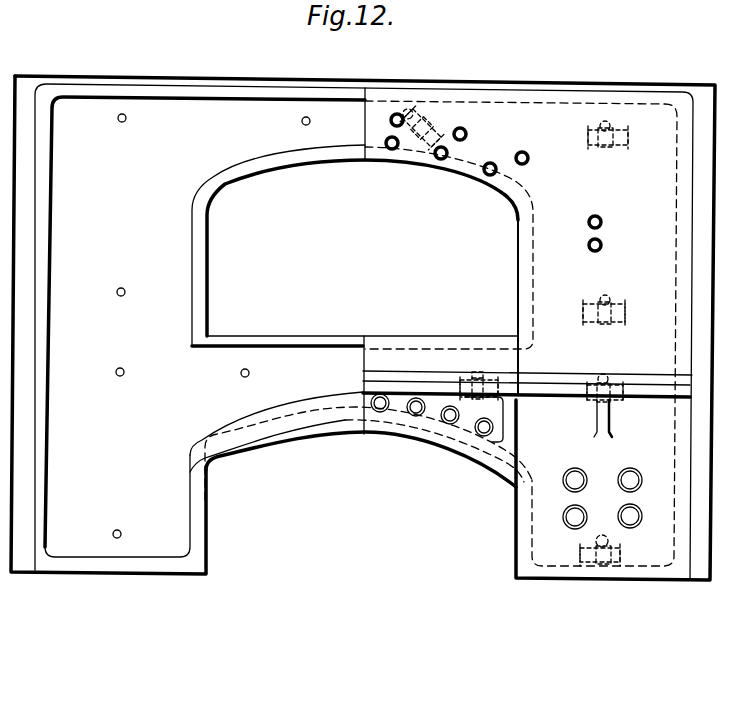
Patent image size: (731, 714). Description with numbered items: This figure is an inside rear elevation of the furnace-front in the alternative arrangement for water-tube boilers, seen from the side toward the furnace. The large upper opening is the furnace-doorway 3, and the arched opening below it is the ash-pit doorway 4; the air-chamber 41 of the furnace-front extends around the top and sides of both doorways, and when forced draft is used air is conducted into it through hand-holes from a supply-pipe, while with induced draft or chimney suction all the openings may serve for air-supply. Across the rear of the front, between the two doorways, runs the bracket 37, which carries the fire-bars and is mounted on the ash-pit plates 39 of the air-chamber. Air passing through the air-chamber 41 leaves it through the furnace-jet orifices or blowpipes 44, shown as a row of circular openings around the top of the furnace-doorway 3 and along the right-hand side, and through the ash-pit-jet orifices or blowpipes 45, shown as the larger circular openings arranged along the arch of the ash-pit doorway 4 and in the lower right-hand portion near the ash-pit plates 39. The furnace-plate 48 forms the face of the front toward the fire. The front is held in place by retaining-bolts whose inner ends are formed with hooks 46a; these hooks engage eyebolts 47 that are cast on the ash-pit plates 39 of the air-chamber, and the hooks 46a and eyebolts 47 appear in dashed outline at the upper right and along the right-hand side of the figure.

The furnace-doorway 3 is at (362, 270).
The ash-pit doorway 4 is at (361, 452).
The bracket 37 is at (414, 385).
The ash-pit plates 39 is at (492, 410).
The air-chamber 41 is at (205, 327).
The furnace-jet orifices or blowpipes 44 is at (389, 120).
The ash-pit-jet orifices or blowpipes 45 is at (413, 410).
The hooks 46a is at (432, 116).
The eyebolts 47 is at (423, 140).
The furnace-plate 48 is at (481, 149).